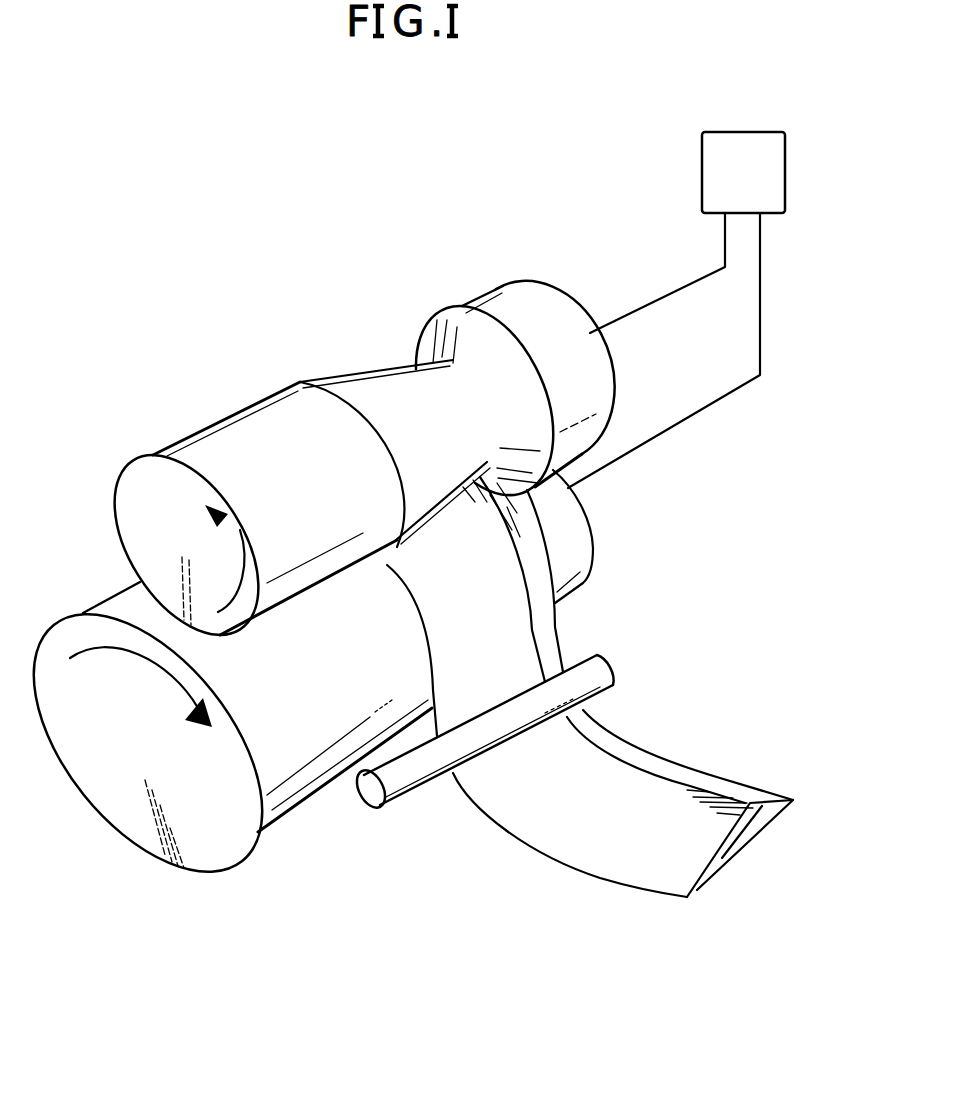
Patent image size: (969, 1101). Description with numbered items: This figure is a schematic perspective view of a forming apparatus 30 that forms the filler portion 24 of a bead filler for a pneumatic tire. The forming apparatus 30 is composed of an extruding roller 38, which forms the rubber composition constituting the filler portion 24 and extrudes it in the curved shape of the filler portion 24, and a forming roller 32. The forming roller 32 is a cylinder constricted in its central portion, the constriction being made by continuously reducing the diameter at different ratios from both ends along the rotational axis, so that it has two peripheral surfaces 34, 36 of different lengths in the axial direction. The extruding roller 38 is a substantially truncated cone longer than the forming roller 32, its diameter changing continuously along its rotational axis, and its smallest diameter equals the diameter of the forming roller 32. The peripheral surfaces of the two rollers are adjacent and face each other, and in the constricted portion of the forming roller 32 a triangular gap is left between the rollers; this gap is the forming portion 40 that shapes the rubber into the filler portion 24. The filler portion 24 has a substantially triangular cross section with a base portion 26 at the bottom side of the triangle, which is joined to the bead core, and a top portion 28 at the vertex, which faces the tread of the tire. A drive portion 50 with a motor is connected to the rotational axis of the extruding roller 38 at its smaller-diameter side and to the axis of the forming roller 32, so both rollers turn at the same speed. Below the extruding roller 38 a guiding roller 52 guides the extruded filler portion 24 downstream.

The filler portion 24 is at (837, 907).
The base portion 26 is at (787, 820).
The top portion 28 is at (718, 885).
The forming apparatus 30 is at (630, 133).
The forming roller 32 is at (530, 303).
The peripheral surface 34 is at (394, 408).
The peripheral surface 36 is at (497, 365).
The extruding roller 38 is at (297, 794).
The forming portion 40 is at (461, 525).
The drive portion 50 is at (785, 193).
The guiding roller 52 is at (405, 800).